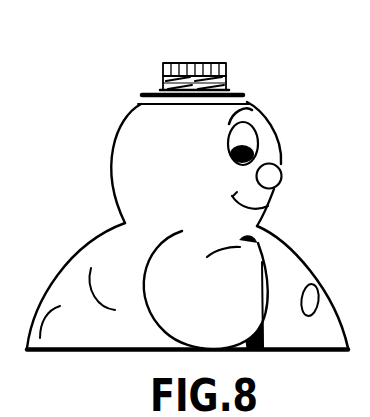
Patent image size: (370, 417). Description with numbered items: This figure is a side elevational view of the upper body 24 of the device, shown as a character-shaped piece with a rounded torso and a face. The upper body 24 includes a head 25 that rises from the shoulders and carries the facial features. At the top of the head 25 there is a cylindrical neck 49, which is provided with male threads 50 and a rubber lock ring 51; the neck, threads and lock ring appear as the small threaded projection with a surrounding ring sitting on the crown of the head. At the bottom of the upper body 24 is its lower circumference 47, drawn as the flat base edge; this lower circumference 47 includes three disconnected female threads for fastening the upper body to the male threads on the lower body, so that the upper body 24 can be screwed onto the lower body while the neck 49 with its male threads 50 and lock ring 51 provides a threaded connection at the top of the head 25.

The upper body 24 is at (300, 267).
The head 25 is at (265, 148).
The lower circumference 47 is at (80, 352).
The cylindrical neck 49 is at (226, 76).
The male threads 50 is at (176, 63).
The rubber lock ring 51 is at (241, 93).